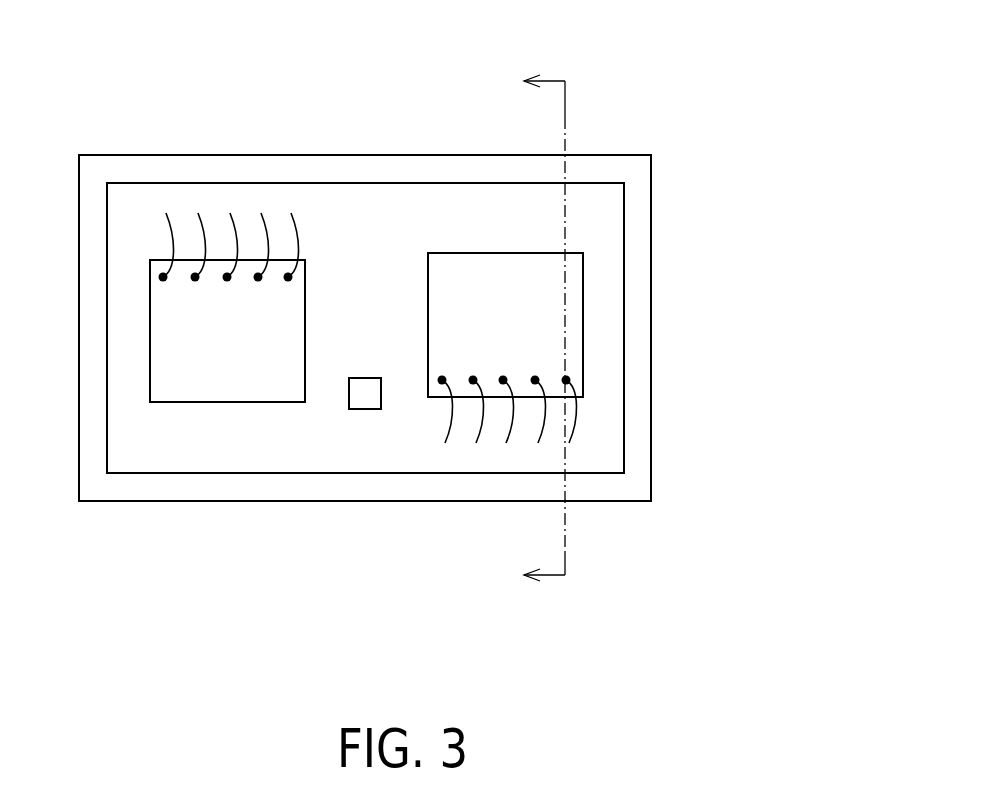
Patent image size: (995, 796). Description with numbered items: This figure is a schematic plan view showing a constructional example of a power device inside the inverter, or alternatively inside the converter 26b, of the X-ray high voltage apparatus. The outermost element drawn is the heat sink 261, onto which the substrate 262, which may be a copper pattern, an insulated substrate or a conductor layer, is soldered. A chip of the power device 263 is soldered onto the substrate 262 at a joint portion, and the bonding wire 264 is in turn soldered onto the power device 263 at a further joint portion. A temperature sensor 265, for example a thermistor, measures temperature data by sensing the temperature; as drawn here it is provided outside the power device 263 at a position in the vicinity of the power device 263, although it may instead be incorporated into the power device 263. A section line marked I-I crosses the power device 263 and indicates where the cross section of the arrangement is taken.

The converter 26b is at (645, 91).
The heat sink 261 is at (651, 218).
The substrate 262 is at (624, 314).
The power device 263 is at (583, 367).
The bonding wire 264 is at (299, 228).
The temperature sensor 265 is at (368, 378).